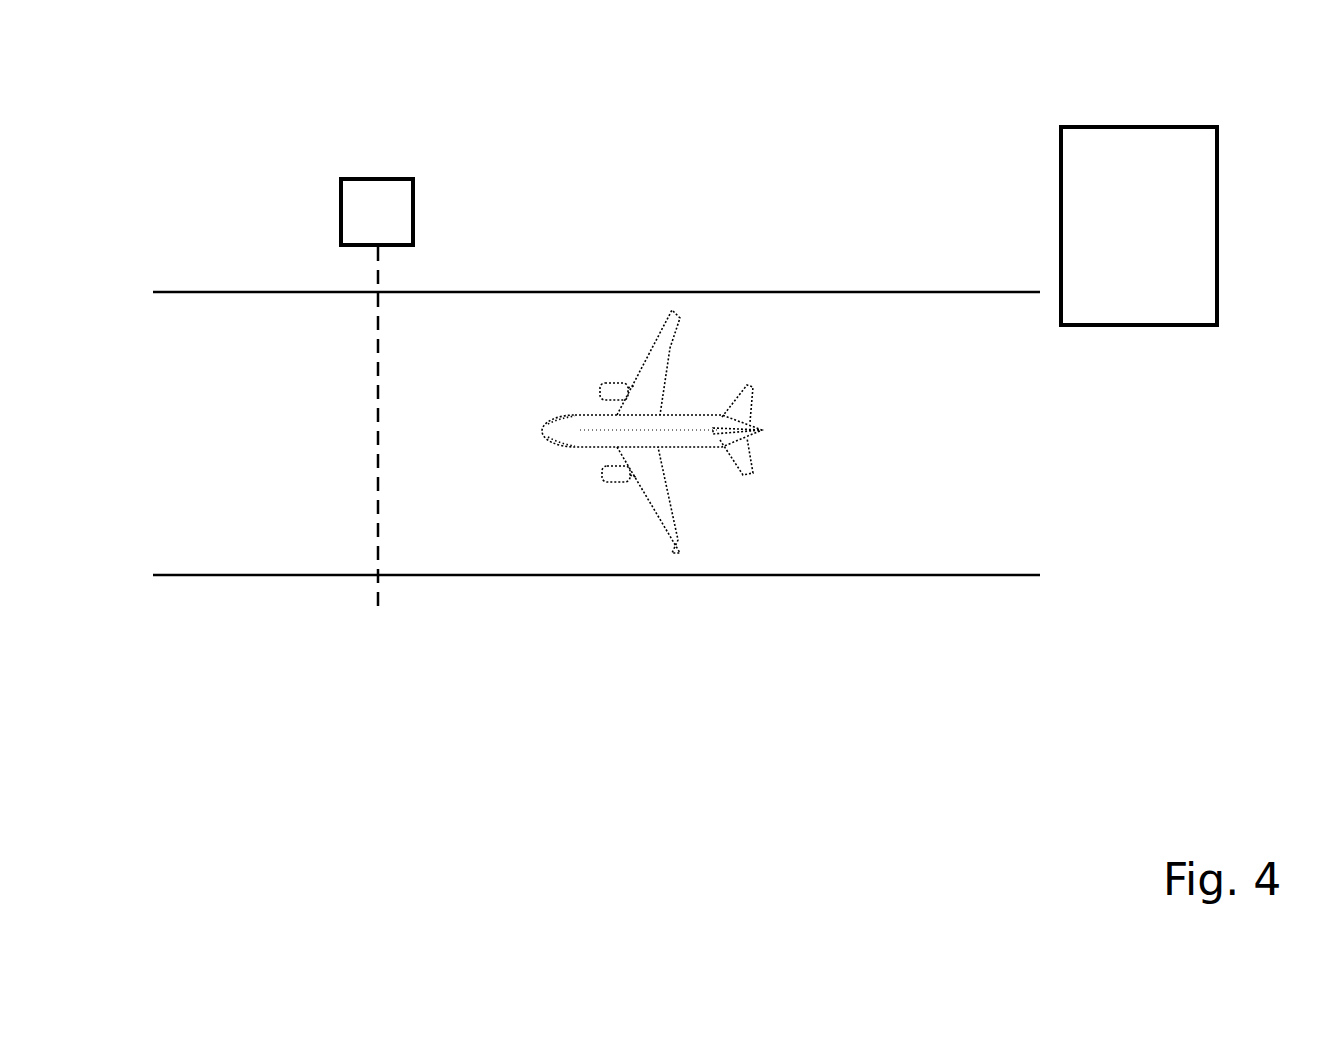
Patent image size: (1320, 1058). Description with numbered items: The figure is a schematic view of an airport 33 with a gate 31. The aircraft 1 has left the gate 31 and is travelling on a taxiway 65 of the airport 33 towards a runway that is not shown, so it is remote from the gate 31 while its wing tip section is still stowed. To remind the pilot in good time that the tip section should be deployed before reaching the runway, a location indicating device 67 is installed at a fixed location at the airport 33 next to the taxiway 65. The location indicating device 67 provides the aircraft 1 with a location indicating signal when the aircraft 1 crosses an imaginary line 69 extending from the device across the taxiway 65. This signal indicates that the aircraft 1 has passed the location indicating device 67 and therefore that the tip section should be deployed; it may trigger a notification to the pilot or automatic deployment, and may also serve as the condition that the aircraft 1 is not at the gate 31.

The aircraft 1 is at (689, 405).
The gate 31 is at (1180, 145).
The airport 33 is at (860, 124).
The taxiway 65 is at (912, 553).
The location indicating device 67 is at (385, 197).
The imaginary line 69 is at (378, 599).